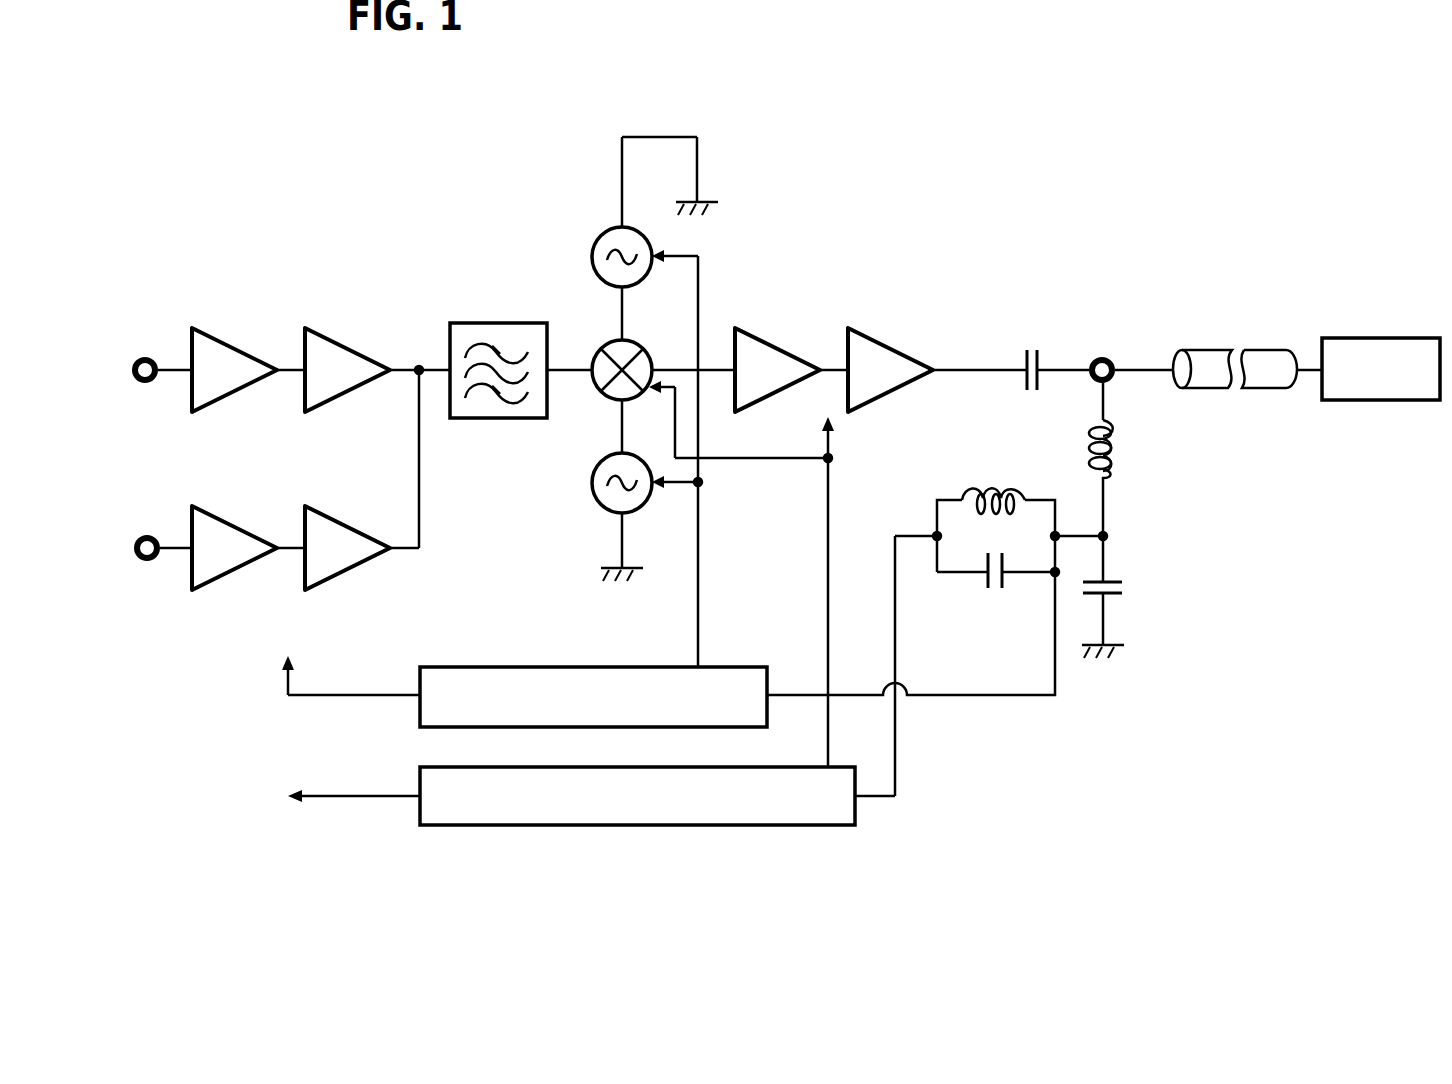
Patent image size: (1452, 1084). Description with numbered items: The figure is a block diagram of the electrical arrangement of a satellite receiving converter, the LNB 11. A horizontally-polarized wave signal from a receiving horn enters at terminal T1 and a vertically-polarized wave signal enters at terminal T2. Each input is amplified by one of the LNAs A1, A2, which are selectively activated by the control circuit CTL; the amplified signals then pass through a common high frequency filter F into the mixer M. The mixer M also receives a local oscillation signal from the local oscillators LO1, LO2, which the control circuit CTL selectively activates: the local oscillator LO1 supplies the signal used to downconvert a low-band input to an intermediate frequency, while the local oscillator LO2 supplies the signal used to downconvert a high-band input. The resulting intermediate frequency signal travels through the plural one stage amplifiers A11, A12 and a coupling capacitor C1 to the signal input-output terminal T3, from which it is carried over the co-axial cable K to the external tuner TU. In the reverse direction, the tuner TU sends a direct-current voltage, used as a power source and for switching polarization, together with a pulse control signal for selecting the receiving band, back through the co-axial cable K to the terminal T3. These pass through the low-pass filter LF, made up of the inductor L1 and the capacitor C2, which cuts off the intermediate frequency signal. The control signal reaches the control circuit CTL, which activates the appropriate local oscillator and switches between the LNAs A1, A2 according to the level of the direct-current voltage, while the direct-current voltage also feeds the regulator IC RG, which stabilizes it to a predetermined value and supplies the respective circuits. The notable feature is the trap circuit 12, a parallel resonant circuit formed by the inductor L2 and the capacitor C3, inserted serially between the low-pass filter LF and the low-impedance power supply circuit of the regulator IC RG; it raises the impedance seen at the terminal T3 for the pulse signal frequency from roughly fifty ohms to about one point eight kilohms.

The LNB 11 is at (258, 142).
The terminal T1 is at (145, 357).
The terminal T2 is at (147, 561).
The signal input-output terminal T3 is at (1102, 358).
The LNA A1 is at (387, 316).
The LNA A2 is at (390, 599).
The high frequency filter F is at (465, 322).
The mixer M is at (602, 340).
The local oscillator LO1 is at (602, 228).
The local oscillator LO2 is at (597, 504).
The one stage amplifier A11 is at (788, 353).
The one stage amplifier A12 is at (901, 355).
The coupling capacitor C1 is at (1025, 352).
The co-axial cable K is at (1277, 348).
The tuner TU is at (1380, 338).
The inductor L1 is at (1113, 428).
The inductor L2 is at (993, 488).
The capacitor C2 is at (1117, 597).
The capacitor C3 is at (1003, 585).
The low-pass filter LF is at (1157, 536).
The trap circuit 12 is at (978, 524).
The control circuit CTL is at (480, 667).
The regulator IC RG is at (487, 828).